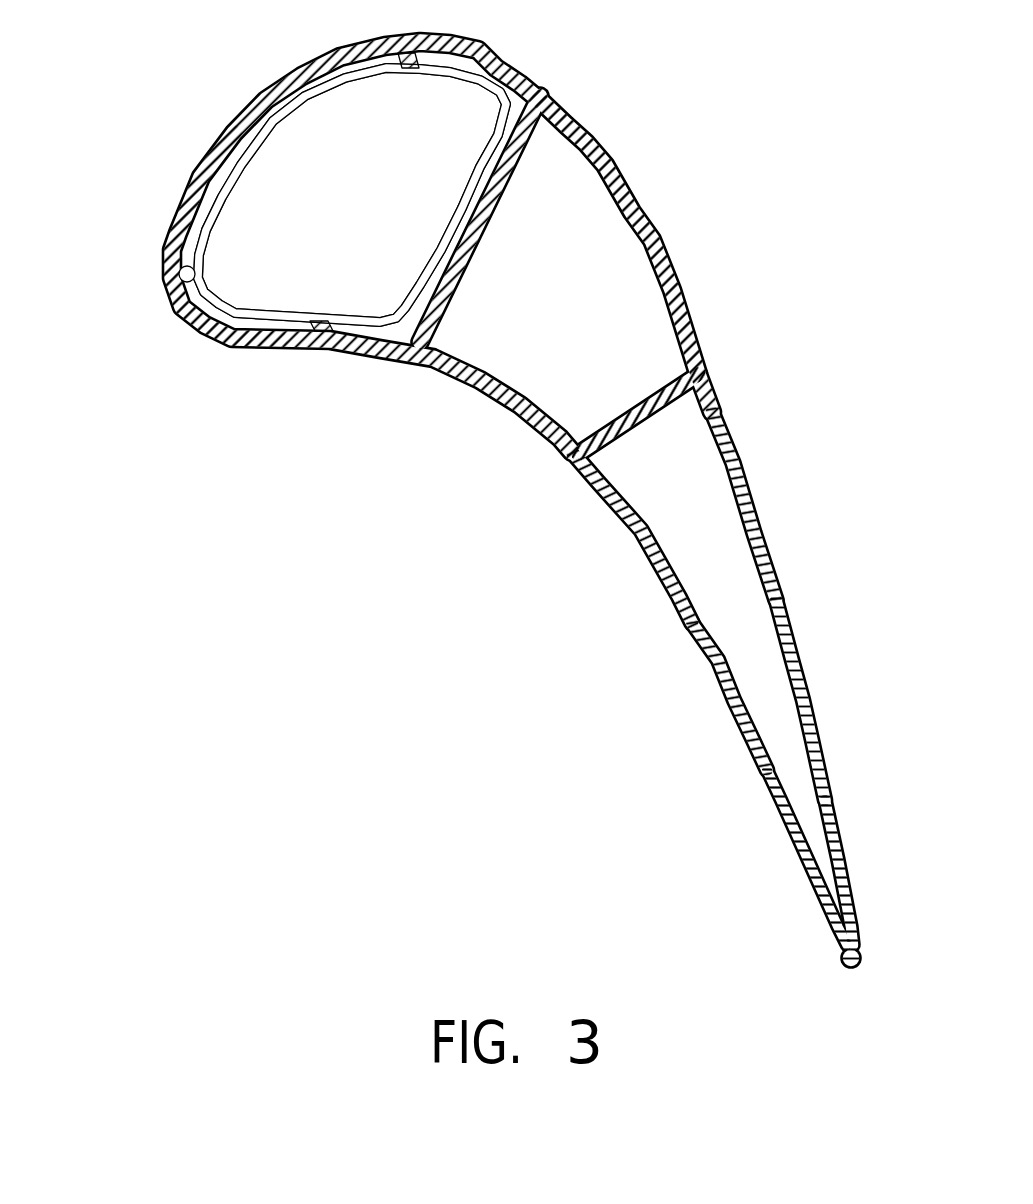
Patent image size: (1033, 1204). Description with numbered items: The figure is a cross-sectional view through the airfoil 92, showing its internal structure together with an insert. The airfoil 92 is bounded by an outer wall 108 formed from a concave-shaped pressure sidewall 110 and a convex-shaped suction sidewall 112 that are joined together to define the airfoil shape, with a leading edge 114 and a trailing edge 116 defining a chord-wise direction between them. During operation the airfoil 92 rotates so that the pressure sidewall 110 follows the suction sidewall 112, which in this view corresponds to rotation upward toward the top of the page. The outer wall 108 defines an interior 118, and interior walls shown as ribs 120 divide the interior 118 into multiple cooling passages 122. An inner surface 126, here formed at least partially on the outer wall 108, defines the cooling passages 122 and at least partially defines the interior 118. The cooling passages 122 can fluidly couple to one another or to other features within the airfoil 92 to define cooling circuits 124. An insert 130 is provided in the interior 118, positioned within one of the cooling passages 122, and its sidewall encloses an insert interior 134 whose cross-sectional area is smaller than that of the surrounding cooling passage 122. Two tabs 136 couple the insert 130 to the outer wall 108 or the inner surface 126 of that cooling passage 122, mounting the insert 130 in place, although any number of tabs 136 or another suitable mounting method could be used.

The airfoil 92 is at (187, 130).
The outer wall 108 is at (570, 106).
The pressure sidewall 110 is at (680, 620).
The suction sidewall 112 is at (688, 292).
The leading edge 114 is at (176, 313).
The trailing edge 116 is at (862, 975).
The interior 118 is at (587, 233).
The ribs 120 is at (493, 212).
The cooling passages 122 is at (272, 106).
The cooling circuits 124 is at (683, 392).
The inner surface 126 is at (180, 271).
The insert 130 is at (205, 222).
The insert interior 134 is at (379, 171).
The tabs 136 is at (405, 54).